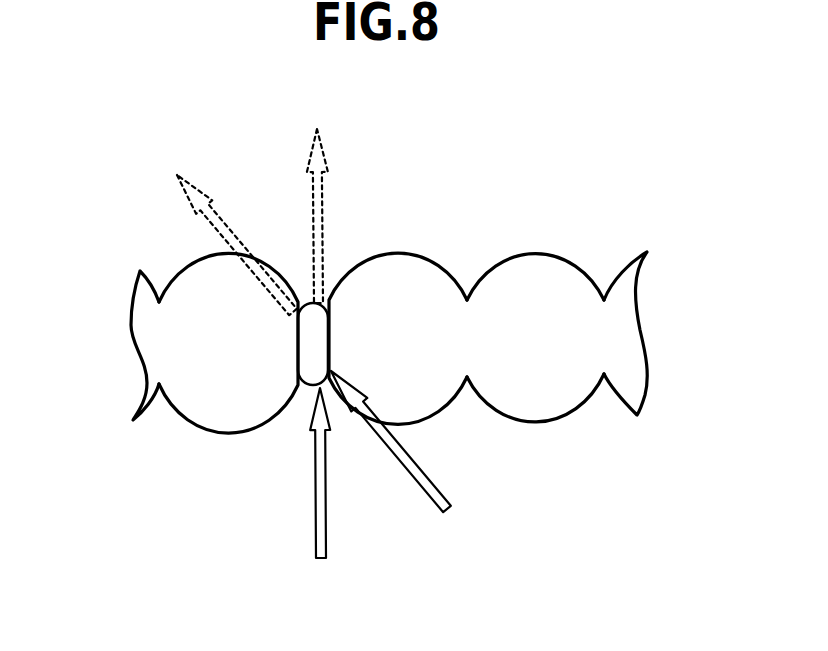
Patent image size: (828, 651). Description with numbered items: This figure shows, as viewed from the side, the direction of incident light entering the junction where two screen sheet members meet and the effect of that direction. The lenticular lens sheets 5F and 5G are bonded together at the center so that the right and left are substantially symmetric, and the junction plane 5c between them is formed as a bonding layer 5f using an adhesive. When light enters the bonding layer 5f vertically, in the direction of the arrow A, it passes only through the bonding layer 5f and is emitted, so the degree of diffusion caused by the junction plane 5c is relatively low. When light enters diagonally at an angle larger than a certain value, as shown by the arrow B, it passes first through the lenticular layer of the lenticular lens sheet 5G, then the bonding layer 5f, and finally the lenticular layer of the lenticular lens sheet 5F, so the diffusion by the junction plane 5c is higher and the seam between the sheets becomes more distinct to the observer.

The lenticular lens sheet 5F is at (200, 297).
The lenticular lens sheet 5G is at (572, 278).
The junction plane 5c is at (345, 256).
The bonding layer 5f is at (322, 329).
The arrow A direction A is at (315, 522).
The arrow B is at (418, 482).